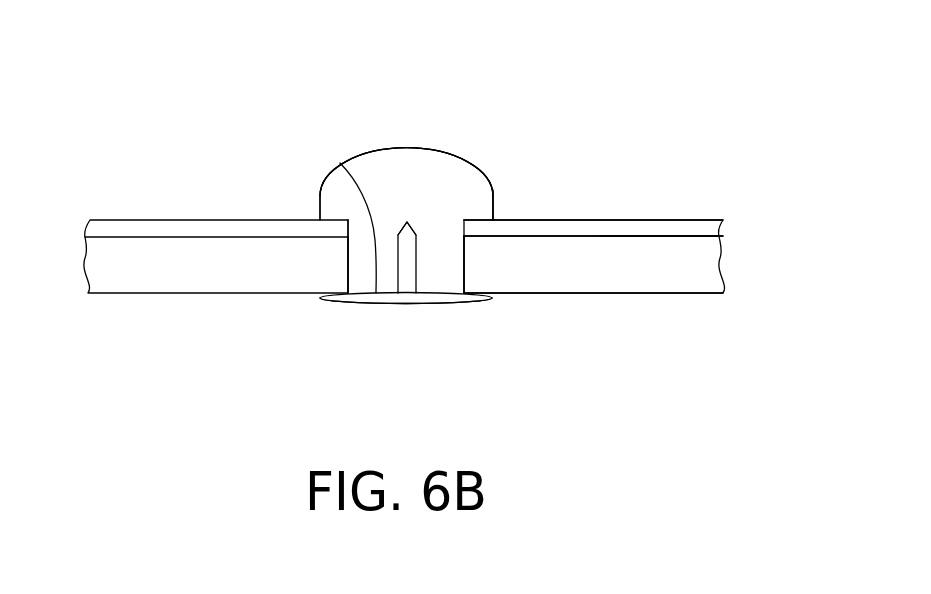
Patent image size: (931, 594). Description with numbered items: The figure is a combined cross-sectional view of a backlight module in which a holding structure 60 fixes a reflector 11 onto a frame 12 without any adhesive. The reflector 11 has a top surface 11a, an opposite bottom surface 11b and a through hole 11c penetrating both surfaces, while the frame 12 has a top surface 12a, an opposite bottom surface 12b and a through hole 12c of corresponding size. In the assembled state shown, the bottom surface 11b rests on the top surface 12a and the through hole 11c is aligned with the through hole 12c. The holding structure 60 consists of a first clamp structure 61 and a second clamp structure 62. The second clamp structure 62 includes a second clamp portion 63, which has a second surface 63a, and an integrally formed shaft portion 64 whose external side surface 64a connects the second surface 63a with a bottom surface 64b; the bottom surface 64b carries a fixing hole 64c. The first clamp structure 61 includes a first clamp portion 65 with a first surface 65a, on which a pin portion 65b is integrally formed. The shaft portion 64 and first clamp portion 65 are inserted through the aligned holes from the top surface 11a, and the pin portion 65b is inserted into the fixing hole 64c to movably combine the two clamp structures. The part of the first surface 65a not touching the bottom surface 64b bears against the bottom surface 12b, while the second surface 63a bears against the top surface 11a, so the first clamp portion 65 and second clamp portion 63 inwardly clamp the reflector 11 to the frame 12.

The reflector 11 is at (655, 230).
The top surface 11a is at (620, 220).
The bottom surface 11b is at (695, 236).
The through hole 11c is at (348, 228).
The frame 12 is at (707, 277).
The top surface 12a is at (668, 240).
The bottom surface 12b is at (623, 297).
The through hole 12c is at (348, 258).
The holding structure 60 is at (470, 158).
The first clamp structure 61 is at (452, 303).
The second clamp structure 62 is at (435, 147).
The second clamp portion 63 is at (410, 163).
The second surface 63a is at (480, 217).
The shaft portion 64 is at (433, 268).
The external side surface 64a is at (465, 283).
The bottom surface 64b is at (340, 163).
The fixing hole 64c is at (405, 221).
The first clamp portion 65 is at (420, 302).
The first surface 65a is at (347, 303).
The pin portion 65b is at (407, 285).